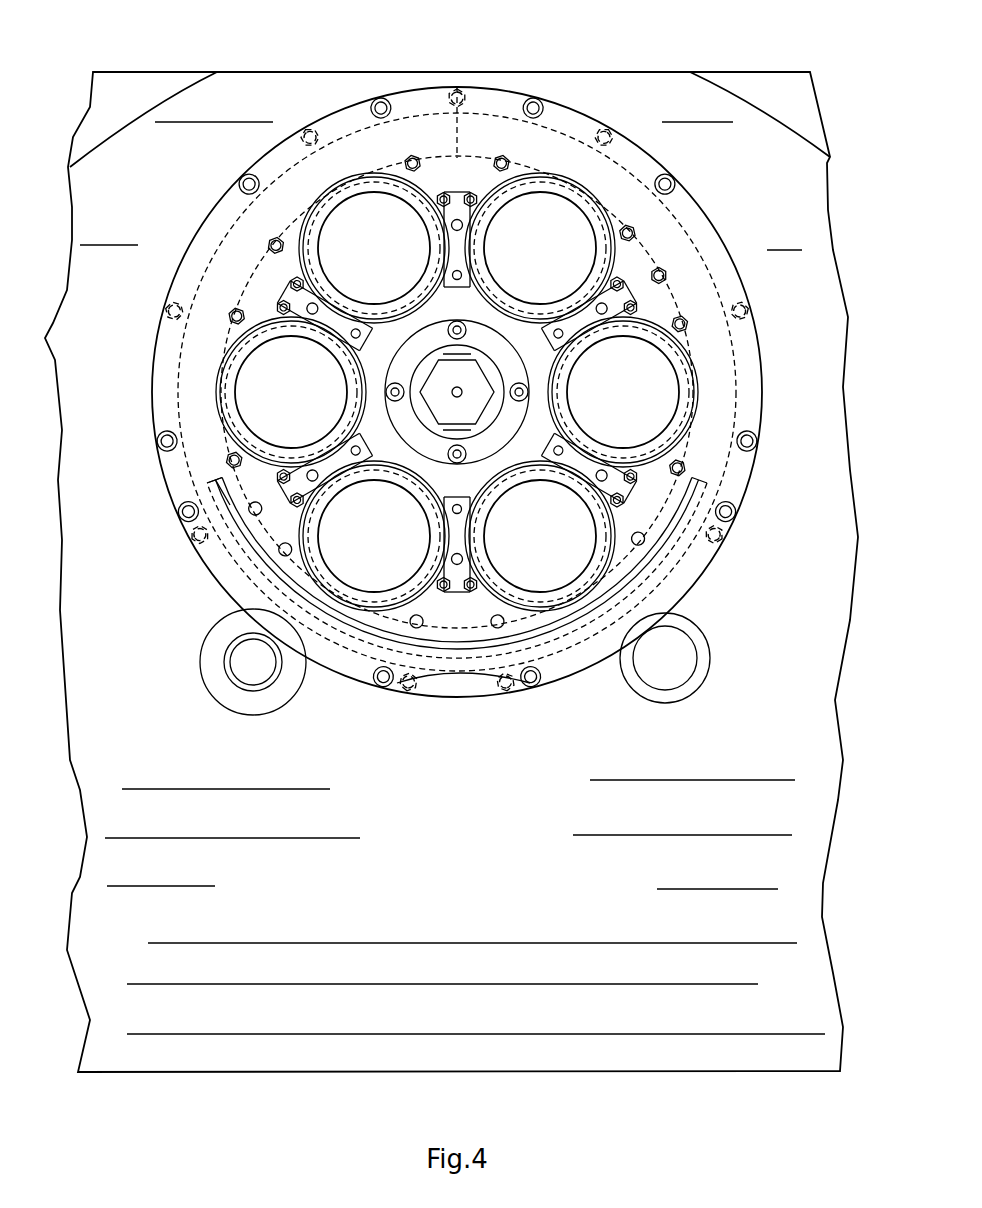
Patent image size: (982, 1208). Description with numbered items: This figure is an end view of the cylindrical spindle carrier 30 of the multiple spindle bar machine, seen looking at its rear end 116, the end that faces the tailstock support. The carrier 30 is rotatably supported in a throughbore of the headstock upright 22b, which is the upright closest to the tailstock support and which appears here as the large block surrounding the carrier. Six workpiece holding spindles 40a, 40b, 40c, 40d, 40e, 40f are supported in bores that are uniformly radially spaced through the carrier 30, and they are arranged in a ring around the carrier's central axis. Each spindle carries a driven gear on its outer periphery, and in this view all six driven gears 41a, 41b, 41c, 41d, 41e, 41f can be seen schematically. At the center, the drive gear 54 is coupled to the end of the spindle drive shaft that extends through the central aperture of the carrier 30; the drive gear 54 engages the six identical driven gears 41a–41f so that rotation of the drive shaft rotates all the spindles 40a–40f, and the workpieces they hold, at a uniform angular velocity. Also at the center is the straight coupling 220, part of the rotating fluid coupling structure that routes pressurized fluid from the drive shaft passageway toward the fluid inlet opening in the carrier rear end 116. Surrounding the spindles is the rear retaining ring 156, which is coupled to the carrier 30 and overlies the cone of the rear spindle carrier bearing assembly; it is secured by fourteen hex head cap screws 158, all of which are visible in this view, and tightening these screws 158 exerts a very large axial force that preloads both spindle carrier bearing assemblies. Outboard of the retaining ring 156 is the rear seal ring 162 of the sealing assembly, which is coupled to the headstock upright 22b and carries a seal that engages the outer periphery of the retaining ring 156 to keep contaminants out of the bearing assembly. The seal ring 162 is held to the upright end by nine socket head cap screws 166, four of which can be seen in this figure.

The spindle carrier 30 is at (293, 120).
The rear end of the spindle carrier 116 is at (329, 158).
The headstock upright 22b is at (447, 751).
The spindle 40a is at (363, 217).
The spindle 40b is at (555, 215).
The spindle 40c is at (636, 383).
The spindle 40d is at (585, 545).
The spindle 40e is at (350, 580).
The spindle 40f is at (255, 375).
The driven gear 41a is at (315, 222).
The driven gear 41b is at (578, 200).
The driven gear 41c is at (695, 358).
The driven gear 41d is at (600, 600).
The driven gear 41e is at (357, 575).
The driven gear 41f is at (230, 438).
The drive gear 54 is at (290, 297).
The straight coupling 220 is at (533, 350).
The hex head cap screws 158 is at (680, 462).
The socket head cap screws 166 is at (185, 517).
The rear retaining ring 156 is at (580, 645).
The rear seal ring 162 is at (228, 568).